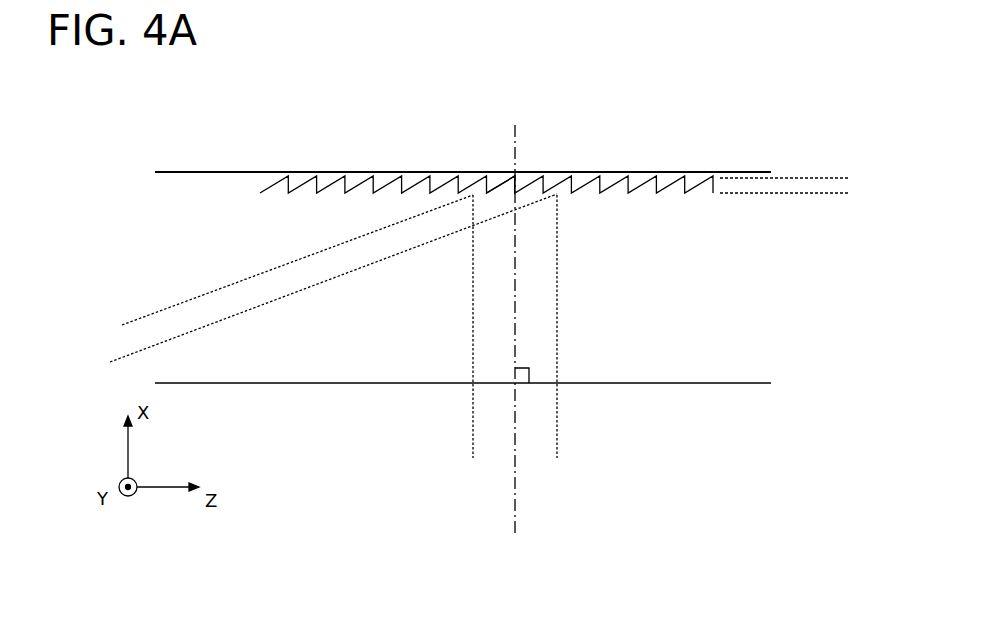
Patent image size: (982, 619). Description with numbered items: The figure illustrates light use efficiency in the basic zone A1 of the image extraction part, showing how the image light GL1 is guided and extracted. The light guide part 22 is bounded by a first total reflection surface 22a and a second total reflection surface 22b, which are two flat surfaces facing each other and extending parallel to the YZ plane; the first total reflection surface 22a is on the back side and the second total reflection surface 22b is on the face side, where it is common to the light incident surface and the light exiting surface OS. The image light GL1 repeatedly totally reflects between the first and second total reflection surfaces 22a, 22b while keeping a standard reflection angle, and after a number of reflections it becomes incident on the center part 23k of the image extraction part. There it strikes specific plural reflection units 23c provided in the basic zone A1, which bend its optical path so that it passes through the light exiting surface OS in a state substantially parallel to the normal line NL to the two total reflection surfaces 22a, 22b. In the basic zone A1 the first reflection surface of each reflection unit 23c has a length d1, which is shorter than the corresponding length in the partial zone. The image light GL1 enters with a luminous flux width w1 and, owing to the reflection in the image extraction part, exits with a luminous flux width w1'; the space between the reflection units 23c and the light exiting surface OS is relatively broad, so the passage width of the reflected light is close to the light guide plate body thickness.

The light guide part 22 is at (210, 210).
The first total reflection surface 22a is at (281, 172).
The second total reflection surface 22b is at (285, 383).
The reflection unit 23c is at (503, 190).
The center part 23k is at (524, 168).
The basic zone A1 is at (612, 158).
The length of the first reflection surface d1 is at (797, 206).
The image light GL1 is at (348, 273).
The luminous flux width w1 is at (188, 312).
The luminous flux width w1' is at (515, 326).
The normal line NL is at (516, 495).